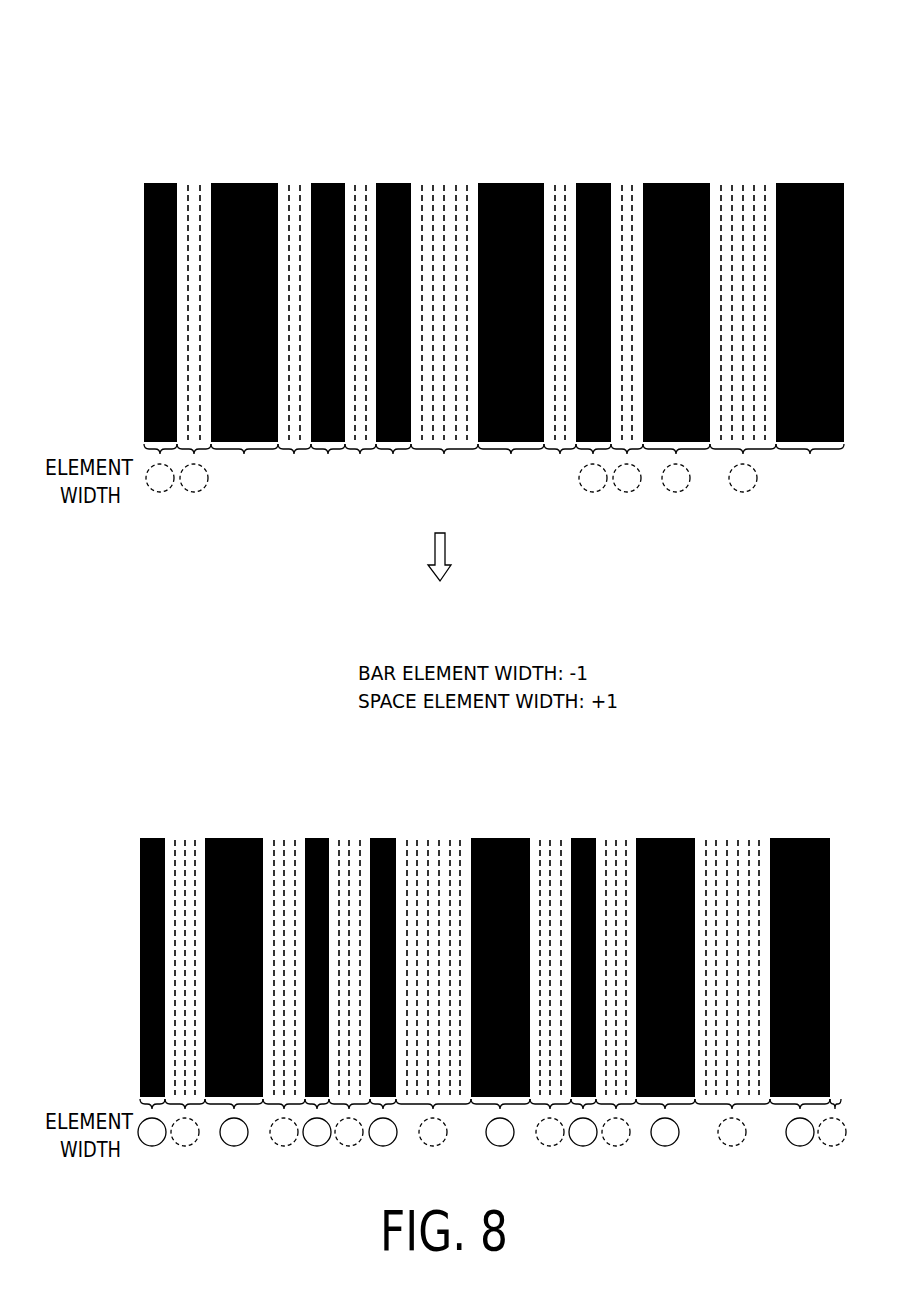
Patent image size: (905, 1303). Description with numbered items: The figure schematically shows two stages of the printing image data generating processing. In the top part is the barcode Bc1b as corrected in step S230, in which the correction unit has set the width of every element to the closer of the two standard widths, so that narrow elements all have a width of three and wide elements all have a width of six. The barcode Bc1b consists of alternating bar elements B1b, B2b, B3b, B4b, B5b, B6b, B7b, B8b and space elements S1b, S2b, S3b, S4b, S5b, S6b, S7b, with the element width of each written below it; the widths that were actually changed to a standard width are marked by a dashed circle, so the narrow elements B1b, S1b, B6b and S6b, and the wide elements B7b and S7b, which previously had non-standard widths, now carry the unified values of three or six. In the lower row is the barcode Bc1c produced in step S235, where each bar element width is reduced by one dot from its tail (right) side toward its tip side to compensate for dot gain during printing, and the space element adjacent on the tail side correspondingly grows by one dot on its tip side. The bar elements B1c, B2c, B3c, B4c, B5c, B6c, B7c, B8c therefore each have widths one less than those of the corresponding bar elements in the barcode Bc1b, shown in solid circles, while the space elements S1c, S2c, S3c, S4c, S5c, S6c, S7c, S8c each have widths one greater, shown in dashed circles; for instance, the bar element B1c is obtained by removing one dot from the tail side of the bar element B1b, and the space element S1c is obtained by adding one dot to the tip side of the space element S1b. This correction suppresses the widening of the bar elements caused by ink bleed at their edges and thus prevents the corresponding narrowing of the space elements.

The element width correction step S230 is at (460, 31).
The dot gain correction step S235 is at (458, 634).
The barcode Bc1b is at (108, 92).
The barcode Bc1c is at (100, 745).
The bar element B1b is at (145, 175).
The bar element B2b is at (232, 175).
The bar element B3b is at (318, 175).
The bar element B4b is at (385, 175).
The bar element B5b is at (496, 175).
The bar element B6b is at (588, 175).
The bar element B7b is at (661, 175).
The bar element B8b is at (802, 175).
The space element S1b is at (176, 170).
The space element S2b is at (281, 170).
The space element S3b is at (350, 170).
The space element S4b is at (432, 170).
The space element S5b is at (548, 170).
The space element S6b is at (620, 170).
The space element S7b is at (726, 170).
The bar element B1c is at (136, 830).
The bar element B2c is at (222, 830).
The bar element B3c is at (310, 830).
The bar element B4c is at (378, 830).
The bar element B5c is at (487, 830).
The bar element B6c is at (578, 830).
The bar element B7c is at (652, 830).
The bar element B8c is at (770, 830).
The space element S1c is at (168, 825).
The space element S2c is at (272, 825).
The space element S3c is at (342, 825).
The space element S4c is at (423, 825).
The space element S5c is at (540, 825).
The space element S6c is at (612, 825).
The space element S7c is at (717, 825).
The space element S8c is at (824, 825).